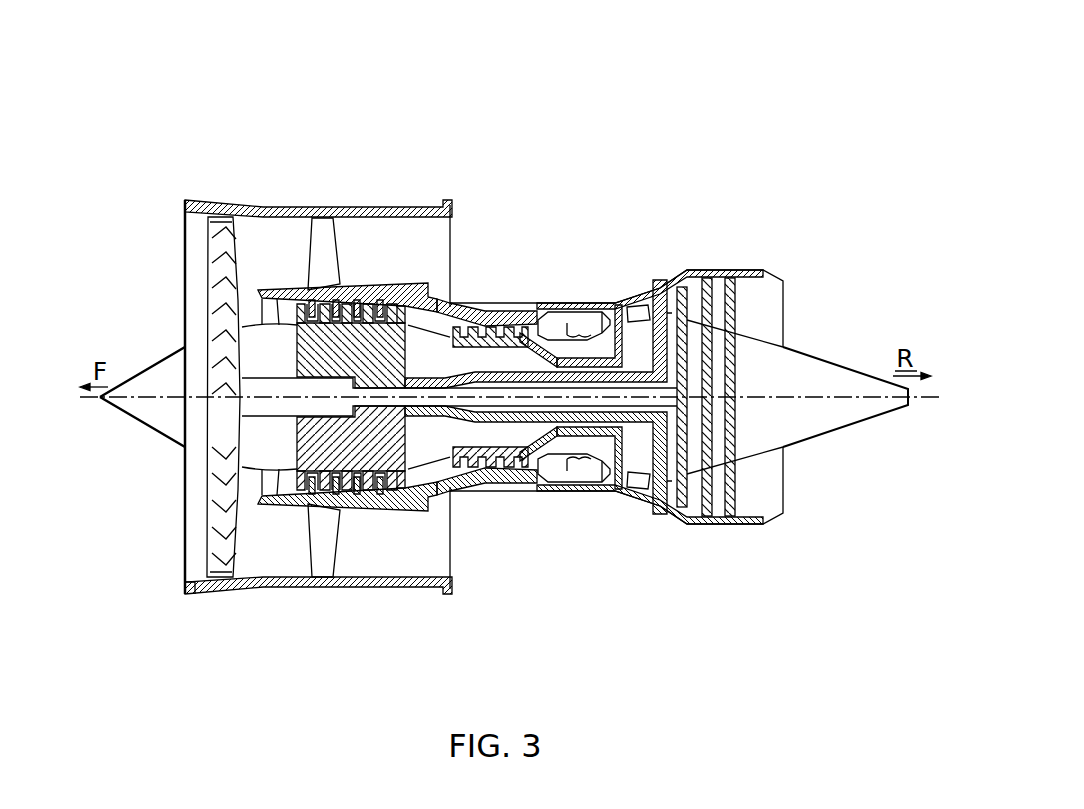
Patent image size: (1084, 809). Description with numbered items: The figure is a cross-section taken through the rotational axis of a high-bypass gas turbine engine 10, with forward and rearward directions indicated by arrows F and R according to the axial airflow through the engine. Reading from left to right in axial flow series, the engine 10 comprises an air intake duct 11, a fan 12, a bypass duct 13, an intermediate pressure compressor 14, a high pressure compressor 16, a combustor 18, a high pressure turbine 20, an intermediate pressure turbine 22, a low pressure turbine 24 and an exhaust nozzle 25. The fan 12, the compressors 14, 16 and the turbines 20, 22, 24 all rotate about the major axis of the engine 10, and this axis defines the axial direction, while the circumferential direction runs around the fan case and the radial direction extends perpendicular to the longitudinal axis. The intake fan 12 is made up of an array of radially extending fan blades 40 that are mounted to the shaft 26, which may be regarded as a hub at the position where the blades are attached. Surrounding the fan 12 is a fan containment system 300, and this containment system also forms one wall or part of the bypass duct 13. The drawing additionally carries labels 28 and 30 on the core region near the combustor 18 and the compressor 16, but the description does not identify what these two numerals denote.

The bypass gas turbine engine 10 is at (660, 97).
The air intake duct 11 is at (195, 248).
The fan 12 is at (207, 300).
The bypass duct 13 is at (404, 257).
The intermediate pressure compressor 14 is at (293, 287).
The high pressure compressor 16 is at (500, 309).
The combustor 18 is at (579, 327).
The high pressure turbine 20 is at (630, 298).
The intermediate pressure turbine 22 is at (660, 290).
The low pressure turbine 24 is at (736, 272).
The exhaust nozzle 25 is at (771, 322).
The shaft 26 is at (253, 408).
The diffuser 28 is at (520, 445).
The combustor casing 30 is at (578, 435).
The fan blades 40 is at (223, 227).
The fan containment system 300 is at (218, 606).